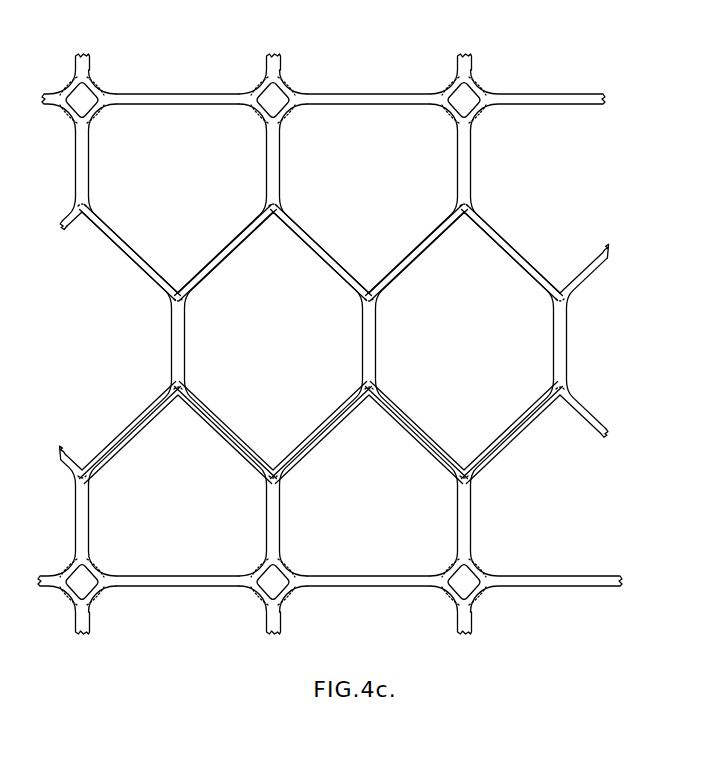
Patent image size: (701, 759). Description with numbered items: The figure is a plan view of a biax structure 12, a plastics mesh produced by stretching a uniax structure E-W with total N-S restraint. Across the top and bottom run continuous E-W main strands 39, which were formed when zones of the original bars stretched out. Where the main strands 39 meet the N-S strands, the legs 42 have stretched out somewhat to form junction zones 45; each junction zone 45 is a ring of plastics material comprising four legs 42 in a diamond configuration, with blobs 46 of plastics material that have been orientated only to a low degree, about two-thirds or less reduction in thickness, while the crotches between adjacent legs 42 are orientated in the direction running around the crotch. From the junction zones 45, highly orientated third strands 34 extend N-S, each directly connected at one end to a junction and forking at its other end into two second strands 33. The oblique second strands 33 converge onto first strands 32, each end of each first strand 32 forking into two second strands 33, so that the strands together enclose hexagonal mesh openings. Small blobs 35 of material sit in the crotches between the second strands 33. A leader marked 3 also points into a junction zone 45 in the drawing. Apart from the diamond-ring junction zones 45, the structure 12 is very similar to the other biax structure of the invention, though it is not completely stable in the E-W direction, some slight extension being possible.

The biax structure 12 is at (190, 93).
The main strands 39 is at (184, 104).
The legs 42 is at (287, 84).
The junction zones 45 is at (264, 91).
The blobs 46 is at (300, 105).
The junction opening 3 is at (271, 106).
The third strands 34 is at (275, 164).
The blobs 35 is at (280, 198).
The second strands 33 is at (329, 255).
The first strands 32 is at (371, 343).